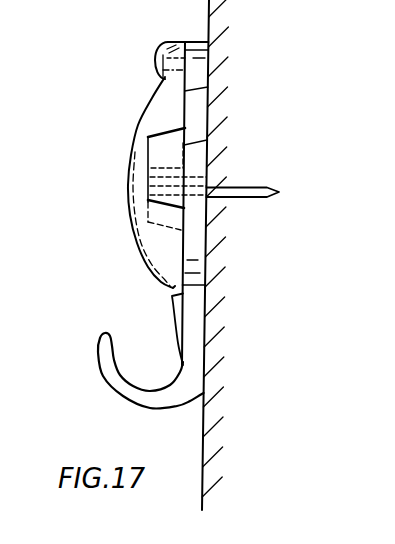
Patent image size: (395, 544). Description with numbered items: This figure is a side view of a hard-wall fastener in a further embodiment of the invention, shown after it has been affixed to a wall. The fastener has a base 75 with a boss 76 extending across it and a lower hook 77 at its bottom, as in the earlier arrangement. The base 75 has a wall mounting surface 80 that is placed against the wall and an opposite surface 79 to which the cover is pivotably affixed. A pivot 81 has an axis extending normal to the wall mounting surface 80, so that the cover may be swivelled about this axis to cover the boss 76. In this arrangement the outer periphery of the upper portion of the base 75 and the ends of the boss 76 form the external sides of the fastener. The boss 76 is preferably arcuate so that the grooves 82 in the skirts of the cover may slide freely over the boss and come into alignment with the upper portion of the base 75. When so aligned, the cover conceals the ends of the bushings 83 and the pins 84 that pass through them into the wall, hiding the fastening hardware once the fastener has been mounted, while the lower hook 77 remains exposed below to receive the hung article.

The base 75 is at (197, 320).
The boss 76 is at (157, 149).
The lower hook 77 is at (115, 386).
The surface of the base 79 is at (208, 90).
The wall mounting surface 80 is at (204, 350).
The pivot 81 is at (155, 66).
The grooves 82 is at (160, 131).
The bushings 83 is at (247, 183).
The pins 84 is at (188, 204).